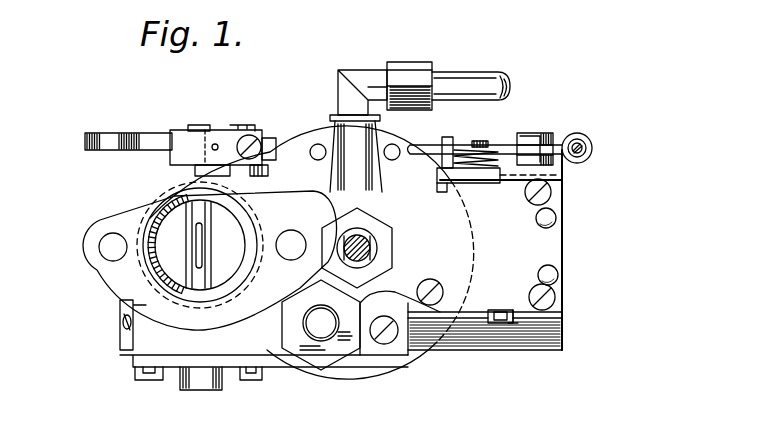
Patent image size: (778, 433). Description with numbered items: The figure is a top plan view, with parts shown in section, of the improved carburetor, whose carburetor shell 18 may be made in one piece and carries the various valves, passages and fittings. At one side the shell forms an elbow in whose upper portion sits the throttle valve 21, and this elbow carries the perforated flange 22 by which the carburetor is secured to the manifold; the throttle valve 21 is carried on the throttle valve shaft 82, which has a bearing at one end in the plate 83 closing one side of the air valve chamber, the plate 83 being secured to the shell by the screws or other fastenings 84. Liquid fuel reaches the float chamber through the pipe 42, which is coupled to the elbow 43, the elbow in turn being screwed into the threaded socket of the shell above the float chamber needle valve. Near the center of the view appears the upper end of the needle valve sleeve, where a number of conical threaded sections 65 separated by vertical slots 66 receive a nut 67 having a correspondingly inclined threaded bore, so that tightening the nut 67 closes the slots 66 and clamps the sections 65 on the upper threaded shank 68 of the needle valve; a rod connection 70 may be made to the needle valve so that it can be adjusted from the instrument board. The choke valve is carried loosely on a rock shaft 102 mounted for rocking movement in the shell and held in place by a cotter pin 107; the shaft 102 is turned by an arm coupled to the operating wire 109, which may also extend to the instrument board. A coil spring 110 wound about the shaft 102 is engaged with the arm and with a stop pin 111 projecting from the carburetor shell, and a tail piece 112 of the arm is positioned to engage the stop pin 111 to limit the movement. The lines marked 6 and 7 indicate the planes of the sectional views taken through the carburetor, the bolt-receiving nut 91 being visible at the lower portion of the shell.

The section line 6- 6 is at (113, 247).
The section line 7- 7 is at (47, 365).
The carburetor shell 18 is at (562, 330).
The throttle valve 21 is at (172, 228).
The perforated flange 22 is at (112, 218).
The pipe 42 is at (478, 76).
The elbow 43 is at (372, 72).
The conical threaded sections 65 is at (372, 254).
The vertical slots 66 is at (330, 240).
The nut 67 is at (375, 262).
The upper threaded shank 68 is at (372, 236).
The rod connection 70 is at (485, 372).
The throttle valve shaft 82 is at (205, 232).
The plate 83 is at (172, 378).
The screws 84 is at (143, 380).
The plug nut 91 is at (312, 355).
The shaft 102 is at (513, 320).
The cotter pin 107 is at (497, 323).
The operating wire 109 is at (592, 147).
The coil spring 110 is at (478, 175).
The stop pin 111 is at (447, 136).
The tail piece 112 is at (465, 150).